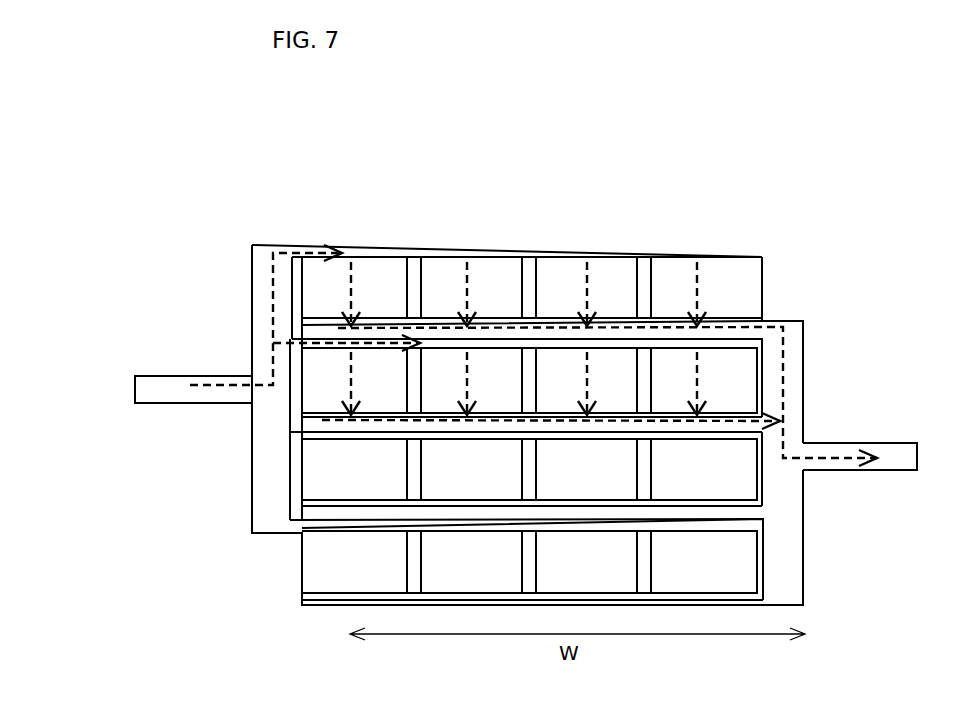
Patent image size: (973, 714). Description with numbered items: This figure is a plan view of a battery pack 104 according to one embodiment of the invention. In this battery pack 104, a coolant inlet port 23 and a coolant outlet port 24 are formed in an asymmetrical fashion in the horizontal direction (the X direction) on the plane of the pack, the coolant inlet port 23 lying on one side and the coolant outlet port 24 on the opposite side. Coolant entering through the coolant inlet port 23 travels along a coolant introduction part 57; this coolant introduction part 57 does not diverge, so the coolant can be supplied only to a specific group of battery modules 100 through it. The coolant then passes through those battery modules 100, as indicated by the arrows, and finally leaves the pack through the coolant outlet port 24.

The battery pack 104 is at (155, 180).
The coolant introduction part 57 is at (410, 256).
The battery module 100 is at (728, 272).
The coolant inlet port 23 is at (133, 392).
The coolant outlet port 24 is at (918, 466).